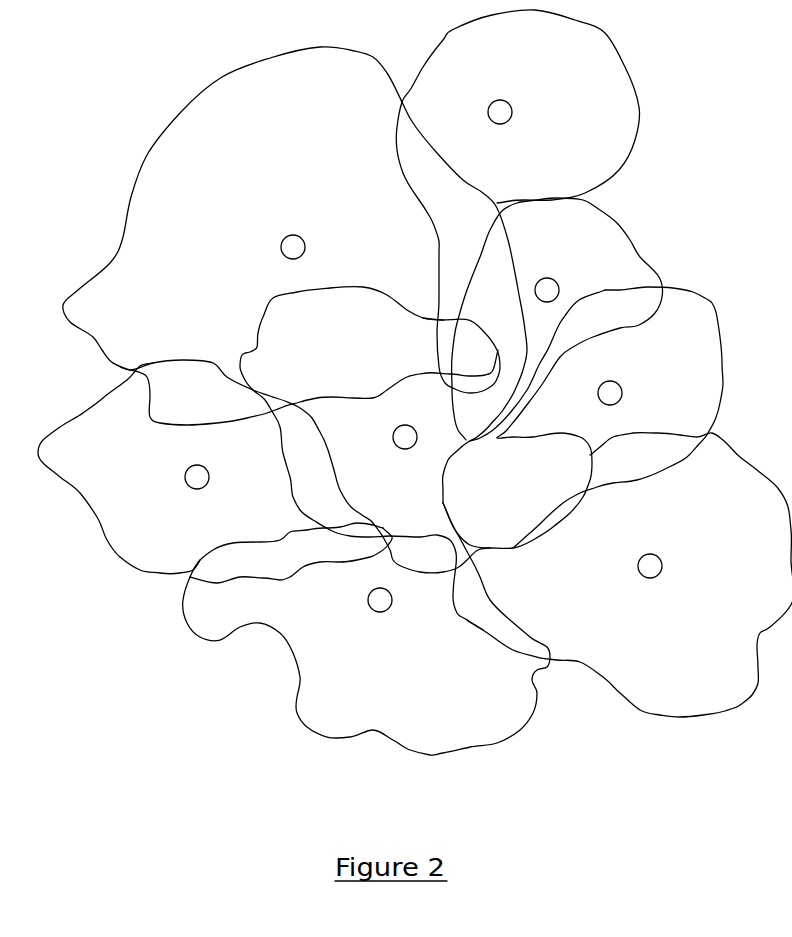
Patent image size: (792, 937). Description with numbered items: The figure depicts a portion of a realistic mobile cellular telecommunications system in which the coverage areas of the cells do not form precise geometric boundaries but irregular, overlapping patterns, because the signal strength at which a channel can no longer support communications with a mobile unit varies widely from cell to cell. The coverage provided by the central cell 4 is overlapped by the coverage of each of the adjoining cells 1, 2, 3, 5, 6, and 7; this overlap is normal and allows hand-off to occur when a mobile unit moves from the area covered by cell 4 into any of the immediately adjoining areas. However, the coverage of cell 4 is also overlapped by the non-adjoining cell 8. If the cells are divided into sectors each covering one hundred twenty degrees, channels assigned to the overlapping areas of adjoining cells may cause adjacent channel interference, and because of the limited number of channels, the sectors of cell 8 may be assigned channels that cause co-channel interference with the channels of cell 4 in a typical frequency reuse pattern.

The cell 1 is at (186, 119).
The cell 2 is at (597, 215).
The cell 3 is at (106, 400).
The cell 4 is at (291, 474).
The cell 5 is at (696, 295).
The cell 6 is at (470, 744).
The cell 7 is at (712, 452).
The cell 8 is at (572, 22).